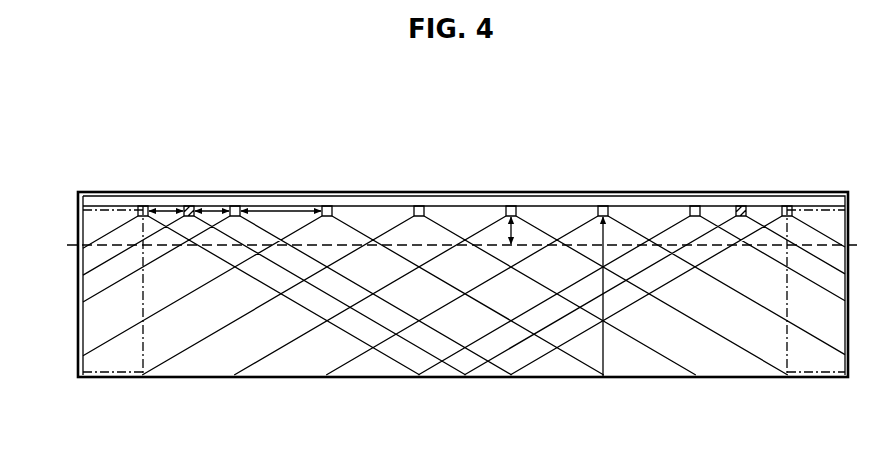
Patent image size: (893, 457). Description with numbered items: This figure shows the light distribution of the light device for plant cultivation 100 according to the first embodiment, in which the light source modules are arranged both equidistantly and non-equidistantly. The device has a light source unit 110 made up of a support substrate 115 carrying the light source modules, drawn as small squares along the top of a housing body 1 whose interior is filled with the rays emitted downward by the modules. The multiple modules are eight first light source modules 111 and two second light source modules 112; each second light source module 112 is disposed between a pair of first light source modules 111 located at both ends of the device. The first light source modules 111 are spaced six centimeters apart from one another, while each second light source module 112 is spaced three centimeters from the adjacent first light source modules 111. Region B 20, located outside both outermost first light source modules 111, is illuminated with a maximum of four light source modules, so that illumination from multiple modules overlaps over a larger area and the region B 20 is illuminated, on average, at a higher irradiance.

The light device for plant cultivation 100 is at (82, 103).
The housing body 1 is at (397, 350).
The region B 20 is at (145, 343).
The light source unit 110 is at (803, 128).
The first light source module 111 is at (692, 206).
The second light source module 112 is at (739, 206).
The support substrate 115 is at (795, 197).